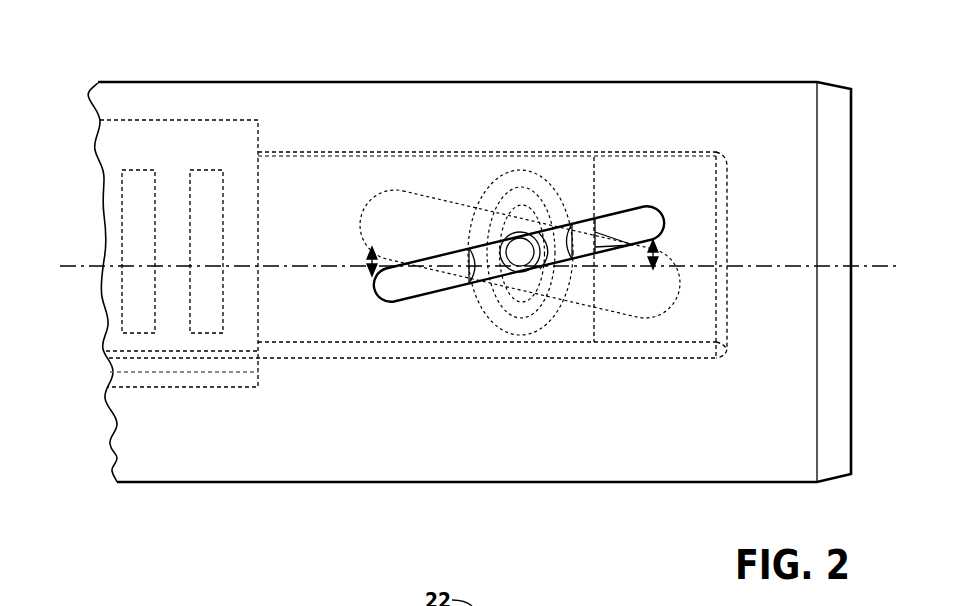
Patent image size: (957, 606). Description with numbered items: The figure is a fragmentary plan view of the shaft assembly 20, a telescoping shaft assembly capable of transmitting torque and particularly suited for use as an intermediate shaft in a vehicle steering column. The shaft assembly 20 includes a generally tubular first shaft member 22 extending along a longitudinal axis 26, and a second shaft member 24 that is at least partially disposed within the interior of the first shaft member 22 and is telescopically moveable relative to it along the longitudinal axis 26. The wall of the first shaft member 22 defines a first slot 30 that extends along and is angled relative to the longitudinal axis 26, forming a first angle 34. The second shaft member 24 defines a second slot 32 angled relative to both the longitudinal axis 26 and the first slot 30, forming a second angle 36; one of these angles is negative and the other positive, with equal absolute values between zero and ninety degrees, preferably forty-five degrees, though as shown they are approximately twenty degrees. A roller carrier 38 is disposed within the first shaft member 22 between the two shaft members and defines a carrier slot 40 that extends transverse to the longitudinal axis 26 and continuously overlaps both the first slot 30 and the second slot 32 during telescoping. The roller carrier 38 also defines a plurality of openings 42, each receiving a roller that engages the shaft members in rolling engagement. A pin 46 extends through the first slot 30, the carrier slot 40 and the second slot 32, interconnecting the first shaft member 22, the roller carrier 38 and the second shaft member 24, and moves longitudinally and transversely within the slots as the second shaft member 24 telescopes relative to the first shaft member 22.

The shaft assembly 20 is at (607, 52).
The first shaft member 22 is at (187, 82).
The second shaft member 24 is at (618, 152).
The longitudinal axis 26 is at (73, 266).
The first slot 30 is at (636, 205).
The second slot 32 is at (398, 192).
The first angle 34 is at (657, 258).
The second angle 36 is at (370, 266).
The roller carrier 38 is at (246, 120).
The carrier slot 40 is at (510, 152).
The openings 42 is at (187, 201).
The pin 46 is at (552, 262).